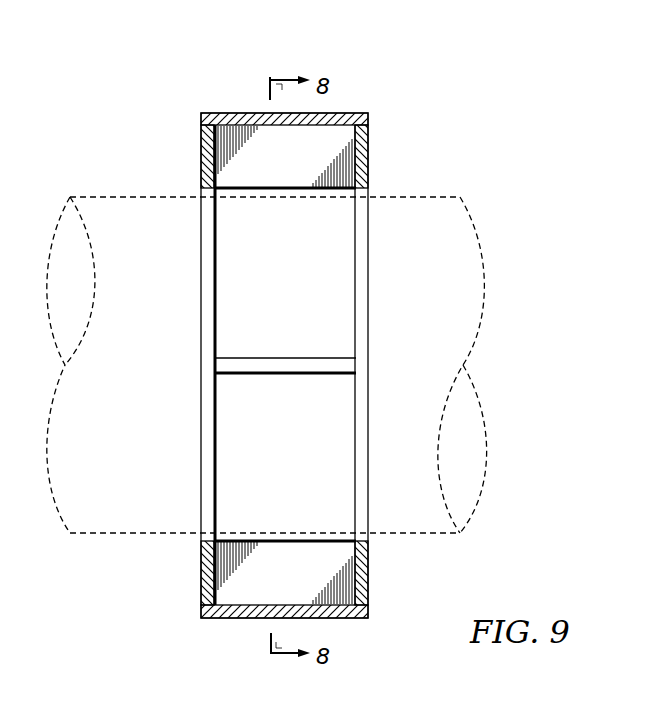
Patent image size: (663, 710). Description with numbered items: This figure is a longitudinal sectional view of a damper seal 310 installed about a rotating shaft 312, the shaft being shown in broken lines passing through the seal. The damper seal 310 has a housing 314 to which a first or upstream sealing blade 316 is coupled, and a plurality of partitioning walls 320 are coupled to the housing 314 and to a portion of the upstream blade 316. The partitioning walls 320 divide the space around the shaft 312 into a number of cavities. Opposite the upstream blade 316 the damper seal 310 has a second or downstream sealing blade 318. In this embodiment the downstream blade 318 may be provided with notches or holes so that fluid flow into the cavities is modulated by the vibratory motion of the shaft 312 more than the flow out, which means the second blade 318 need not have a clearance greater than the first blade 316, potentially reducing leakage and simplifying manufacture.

The damper seal 310 is at (171, 76).
The rotating shaft 312 is at (93, 500).
The housing 314 is at (237, 620).
The first or upstream sealing blade 316 is at (201, 150).
The second or downstream sealing blade 318 is at (368, 150).
The partitioning walls 320 is at (303, 170).